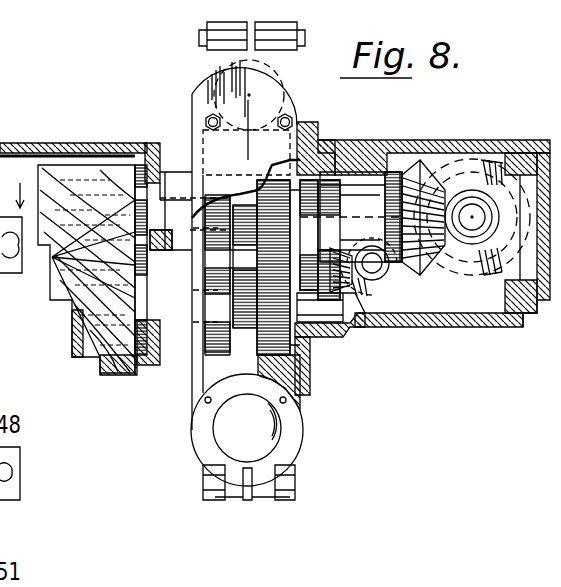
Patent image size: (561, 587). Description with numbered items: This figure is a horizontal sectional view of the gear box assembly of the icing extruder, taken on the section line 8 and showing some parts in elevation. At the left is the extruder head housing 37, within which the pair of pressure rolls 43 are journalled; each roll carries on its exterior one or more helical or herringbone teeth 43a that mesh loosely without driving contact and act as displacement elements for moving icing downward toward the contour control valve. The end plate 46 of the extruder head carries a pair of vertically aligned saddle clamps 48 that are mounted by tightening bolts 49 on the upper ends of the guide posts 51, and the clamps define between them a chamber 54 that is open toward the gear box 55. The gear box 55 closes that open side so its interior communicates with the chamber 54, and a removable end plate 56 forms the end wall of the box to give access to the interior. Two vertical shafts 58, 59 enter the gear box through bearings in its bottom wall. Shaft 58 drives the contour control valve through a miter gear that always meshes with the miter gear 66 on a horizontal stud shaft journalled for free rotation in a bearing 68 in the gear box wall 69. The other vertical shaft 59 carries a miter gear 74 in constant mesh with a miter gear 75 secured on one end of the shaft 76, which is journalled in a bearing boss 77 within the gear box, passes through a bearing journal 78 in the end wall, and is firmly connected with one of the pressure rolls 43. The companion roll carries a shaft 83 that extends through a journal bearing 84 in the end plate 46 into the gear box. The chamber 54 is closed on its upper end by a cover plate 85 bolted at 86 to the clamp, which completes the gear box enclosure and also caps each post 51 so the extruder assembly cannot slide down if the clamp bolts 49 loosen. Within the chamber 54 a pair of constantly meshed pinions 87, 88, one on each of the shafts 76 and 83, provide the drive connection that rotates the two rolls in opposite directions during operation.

The section line 8 is at (16, 228).
The housing 37 is at (56, 133).
The pressure rolls 43 is at (58, 258).
The helical or herringbone teeth 43a is at (95, 186).
The end plate 46 is at (152, 148).
The saddle clamps 48 is at (205, 455).
The bolts 49 is at (295, 36).
The guide rods or posts 51 is at (268, 443).
The chamber 54 is at (213, 372).
The gear box 55 is at (446, 327).
The removable end plate 56 is at (543, 303).
The vertical shaft 58 is at (372, 273).
The vertical shaft 59 is at (472, 226).
The miter gear 66 is at (357, 278).
The bearing 68 is at (300, 258).
The gear box wall 69 is at (302, 207).
The miter gear 74 is at (490, 165).
The miter gear 75 is at (428, 165).
The shaft 76 is at (348, 186).
The bearing boss 77 is at (375, 178).
The bearing journal 78 is at (180, 186).
The shaft 83 is at (170, 303).
The journal bearing 84 is at (217, 275).
The cover plate 85 is at (210, 72).
The bolts 86 is at (287, 118).
The pinion 87 is at (262, 166).
The pinion 88 is at (301, 372).